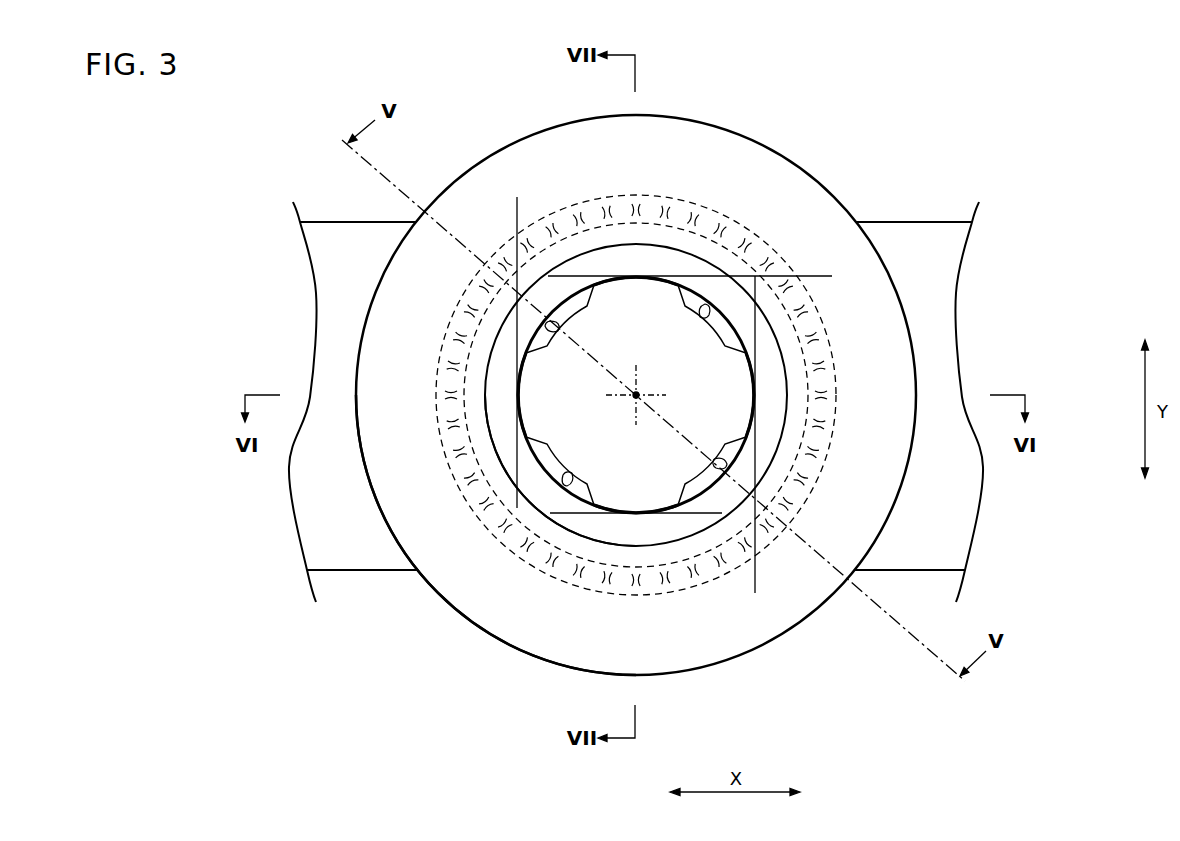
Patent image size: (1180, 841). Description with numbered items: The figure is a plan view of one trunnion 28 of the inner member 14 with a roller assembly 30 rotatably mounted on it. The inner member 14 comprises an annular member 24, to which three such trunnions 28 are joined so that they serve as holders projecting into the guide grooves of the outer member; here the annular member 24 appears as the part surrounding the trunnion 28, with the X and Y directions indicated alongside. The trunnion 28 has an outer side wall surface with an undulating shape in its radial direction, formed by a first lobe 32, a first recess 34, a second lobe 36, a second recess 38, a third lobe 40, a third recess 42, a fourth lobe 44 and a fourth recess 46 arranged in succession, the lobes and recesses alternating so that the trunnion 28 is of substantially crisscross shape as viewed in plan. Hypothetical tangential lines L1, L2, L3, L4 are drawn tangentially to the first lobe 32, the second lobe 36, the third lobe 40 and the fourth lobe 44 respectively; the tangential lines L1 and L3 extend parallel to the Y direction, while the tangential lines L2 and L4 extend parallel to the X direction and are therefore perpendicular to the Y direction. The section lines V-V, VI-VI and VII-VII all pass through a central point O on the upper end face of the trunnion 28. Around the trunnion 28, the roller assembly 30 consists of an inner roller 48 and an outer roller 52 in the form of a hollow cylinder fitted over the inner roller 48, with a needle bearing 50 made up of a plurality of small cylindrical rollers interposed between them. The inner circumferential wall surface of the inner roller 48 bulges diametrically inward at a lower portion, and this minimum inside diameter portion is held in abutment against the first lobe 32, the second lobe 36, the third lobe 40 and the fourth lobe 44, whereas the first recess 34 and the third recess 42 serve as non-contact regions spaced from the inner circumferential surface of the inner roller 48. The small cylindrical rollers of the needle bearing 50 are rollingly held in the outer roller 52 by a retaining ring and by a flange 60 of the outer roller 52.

The inner member 14 is at (935, 577).
The annular member 24 is at (912, 232).
The trunnion 28 is at (724, 367).
The roller assembly 30 is at (734, 129).
The first lobe 32 is at (517, 390).
The first recess 34 is at (580, 309).
The second lobe 36 is at (636, 290).
The second recess 38 is at (708, 314).
The third lobe 40 is at (743, 398).
The third recess 42 is at (706, 477).
The fourth lobe 44 is at (641, 500).
The fourth recess 46 is at (563, 477).
The inner roller 48 is at (553, 495).
The needle bearing 50 is at (724, 215).
The outer roller 52 is at (492, 610).
The flange 60 is at (790, 436).
The central point O is at (636, 395).
The hypothetical tangential line L1 is at (515, 206).
The hypothetical tangential line L2 is at (808, 276).
The hypothetical tangential line L3 is at (757, 577).
The hypothetical tangential line L4 is at (589, 505).